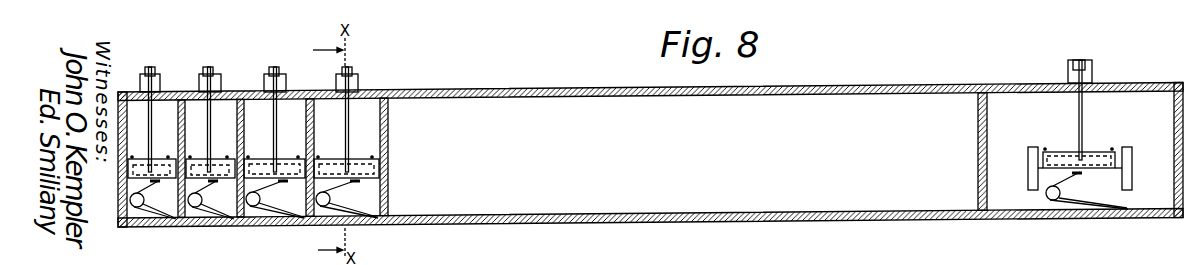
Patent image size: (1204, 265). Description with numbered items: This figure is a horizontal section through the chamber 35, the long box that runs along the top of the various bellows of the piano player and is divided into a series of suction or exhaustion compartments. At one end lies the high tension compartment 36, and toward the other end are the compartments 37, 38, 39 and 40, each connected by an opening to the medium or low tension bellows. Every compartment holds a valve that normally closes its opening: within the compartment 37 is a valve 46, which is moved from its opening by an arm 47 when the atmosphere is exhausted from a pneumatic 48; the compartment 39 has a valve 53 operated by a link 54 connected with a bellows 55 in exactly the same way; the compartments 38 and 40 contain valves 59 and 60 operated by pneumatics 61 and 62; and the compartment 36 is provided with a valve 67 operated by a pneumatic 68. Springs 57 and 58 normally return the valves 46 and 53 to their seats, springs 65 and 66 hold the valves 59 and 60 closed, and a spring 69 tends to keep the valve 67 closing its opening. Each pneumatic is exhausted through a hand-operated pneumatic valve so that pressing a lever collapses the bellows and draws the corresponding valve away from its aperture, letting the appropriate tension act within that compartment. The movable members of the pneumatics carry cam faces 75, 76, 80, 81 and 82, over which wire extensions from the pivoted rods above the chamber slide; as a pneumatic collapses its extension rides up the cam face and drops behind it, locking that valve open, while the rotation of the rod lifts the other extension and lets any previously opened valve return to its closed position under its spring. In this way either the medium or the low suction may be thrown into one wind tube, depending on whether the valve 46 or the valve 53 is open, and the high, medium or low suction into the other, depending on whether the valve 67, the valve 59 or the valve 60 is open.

The chamber 35 is at (676, 96).
The high tension compartment 36 is at (1137, 102).
The compartment 37 is at (381, 89).
The compartment 38 is at (290, 110).
The compartment 39 is at (222, 110).
The compartment 40 is at (132, 108).
The valve 46 is at (376, 164).
The arm 47 is at (363, 118).
The pneumatic 48 is at (358, 77).
The valve 53 is at (214, 168).
The link 54 is at (164, 92).
The bellows 55 is at (222, 78).
The spring 57 is at (360, 227).
The spring 58 is at (213, 218).
The valve 59 is at (288, 170).
The valve 60 is at (160, 170).
The pneumatic 61 is at (276, 66).
The pneumatic 62 is at (153, 67).
The spring 65 is at (275, 218).
The spring 66 is at (153, 228).
The valve 67 is at (1103, 148).
The pneumatic 68 is at (1088, 62).
The spring 69 is at (1083, 207).
The cam face 75 is at (349, 117).
The cam face 76 is at (207, 110).
The cam face 80 is at (1057, 99).
The cam face 81 is at (270, 76).
The cam face 82 is at (143, 74).